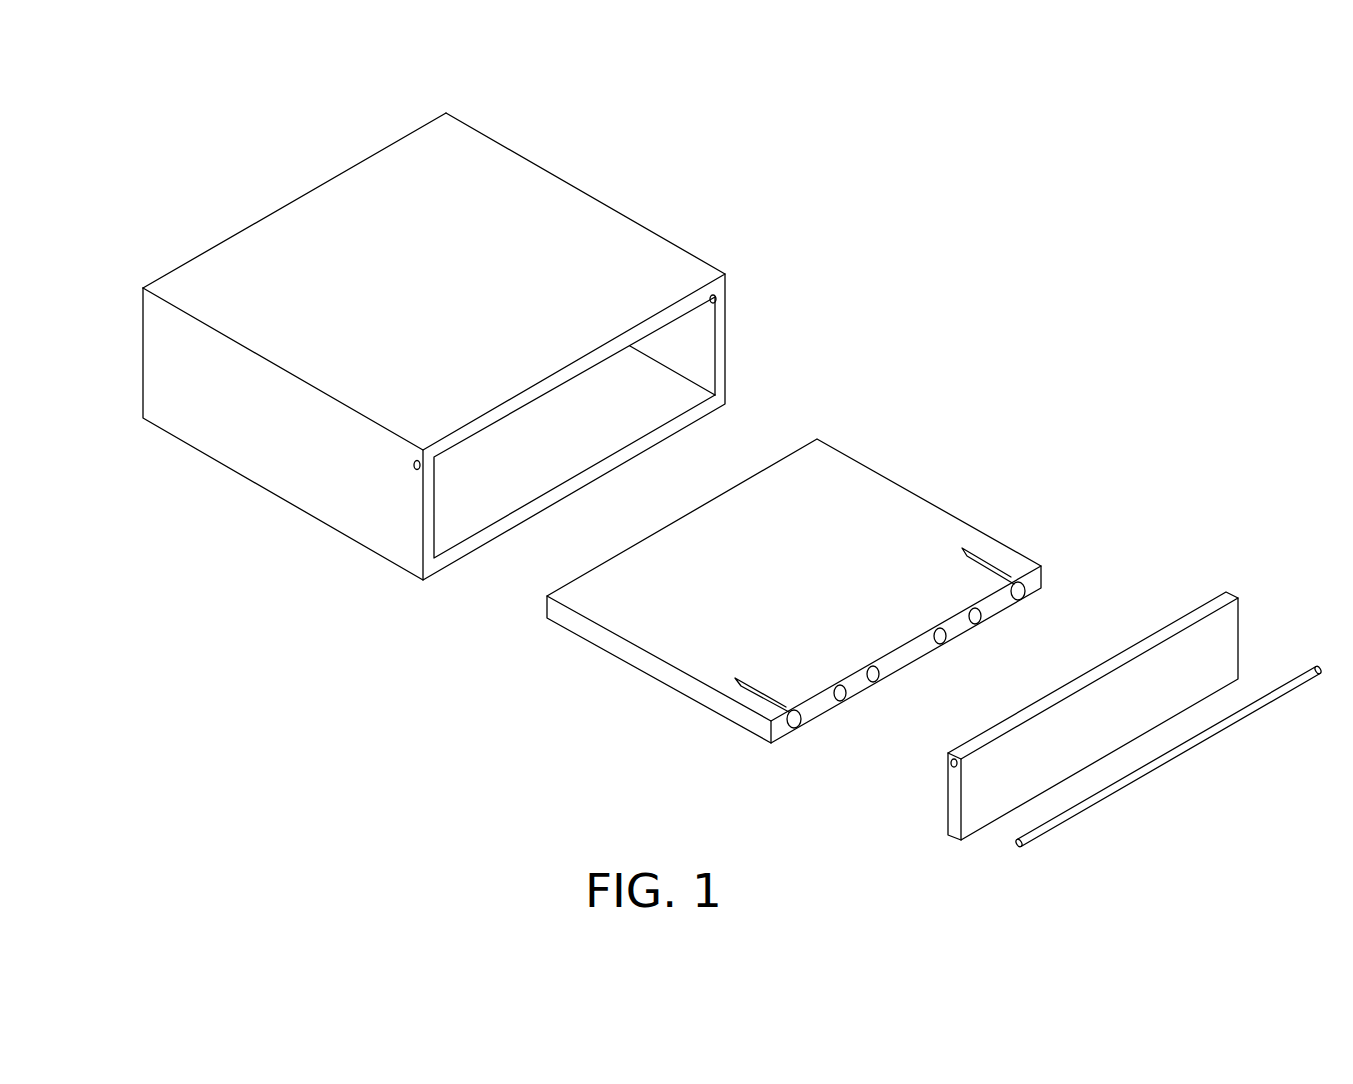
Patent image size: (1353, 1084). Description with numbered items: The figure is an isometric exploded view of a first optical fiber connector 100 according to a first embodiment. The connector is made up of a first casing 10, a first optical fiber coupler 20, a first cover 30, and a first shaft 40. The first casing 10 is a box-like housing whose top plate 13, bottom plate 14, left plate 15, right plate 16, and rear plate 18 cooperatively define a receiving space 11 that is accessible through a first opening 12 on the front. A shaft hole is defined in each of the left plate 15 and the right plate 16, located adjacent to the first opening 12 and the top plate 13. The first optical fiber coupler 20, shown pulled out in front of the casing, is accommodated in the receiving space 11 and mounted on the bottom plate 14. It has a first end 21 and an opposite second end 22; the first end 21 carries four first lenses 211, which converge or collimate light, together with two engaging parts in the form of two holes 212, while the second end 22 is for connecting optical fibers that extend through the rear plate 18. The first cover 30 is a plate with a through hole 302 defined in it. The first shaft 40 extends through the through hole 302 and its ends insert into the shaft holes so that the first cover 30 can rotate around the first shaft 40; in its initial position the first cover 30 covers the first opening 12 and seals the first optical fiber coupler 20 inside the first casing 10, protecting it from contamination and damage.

The first optical fiber connector 100 is at (252, 156).
The first casing 10 is at (619, 177).
The receiving space 11 is at (455, 520).
The first opening 12 is at (717, 360).
The top plate 13 is at (647, 250).
The bottom plate 14 is at (522, 517).
The left plate 15 is at (356, 513).
The right plate 16 is at (720, 327).
The rear plate 18 is at (216, 243).
The first optical fiber coupler 20 is at (972, 477).
The first end 21 is at (1000, 557).
The first lenses 211 is at (943, 640).
The holes 212 is at (803, 728).
The second end 22 is at (827, 475).
The first cover 30 is at (1147, 643).
The through hole 302 is at (948, 763).
The first shaft 40 is at (1314, 660).